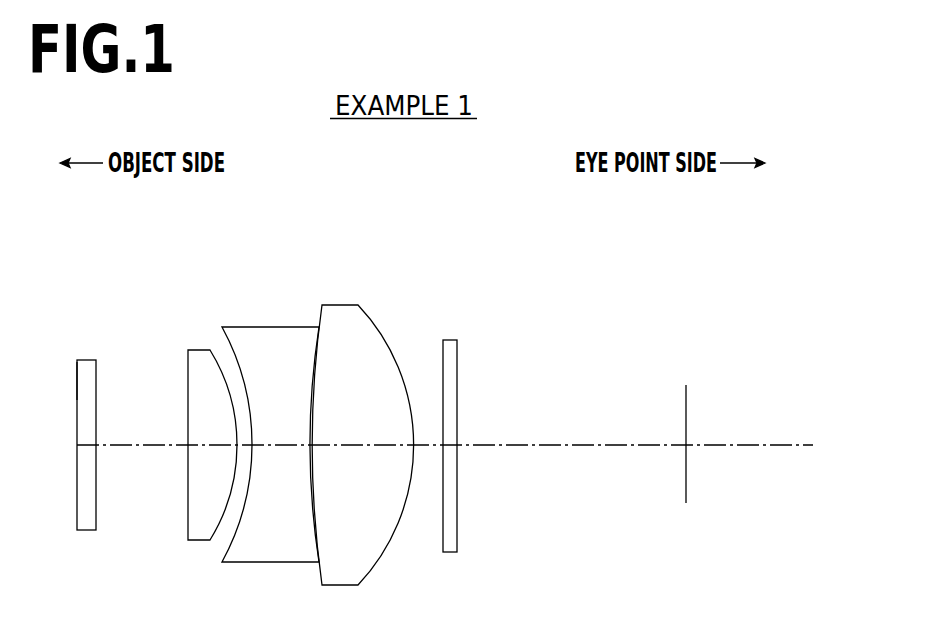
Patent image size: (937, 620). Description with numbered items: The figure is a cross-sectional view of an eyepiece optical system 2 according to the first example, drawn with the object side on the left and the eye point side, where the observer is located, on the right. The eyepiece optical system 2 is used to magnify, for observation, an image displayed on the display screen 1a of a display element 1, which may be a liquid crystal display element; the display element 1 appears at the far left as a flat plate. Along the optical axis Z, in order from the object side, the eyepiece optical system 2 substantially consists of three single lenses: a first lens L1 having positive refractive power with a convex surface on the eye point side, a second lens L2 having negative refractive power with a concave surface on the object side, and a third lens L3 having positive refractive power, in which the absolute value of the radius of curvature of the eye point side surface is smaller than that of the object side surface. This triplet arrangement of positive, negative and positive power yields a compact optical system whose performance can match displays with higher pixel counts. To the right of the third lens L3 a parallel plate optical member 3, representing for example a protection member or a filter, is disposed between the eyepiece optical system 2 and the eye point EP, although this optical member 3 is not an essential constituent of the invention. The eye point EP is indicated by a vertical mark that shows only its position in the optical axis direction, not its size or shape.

The display element 1 is at (84, 359).
The display screen 1a is at (76, 372).
The eyepiece optical system 2 is at (355, 243).
The first lens L1 is at (196, 349).
The second lens L2 is at (269, 330).
The third lens L3 is at (338, 305).
The parallel plate optical member 3 is at (447, 339).
The eye point EP is at (686, 386).
The optical axis Z is at (785, 444).